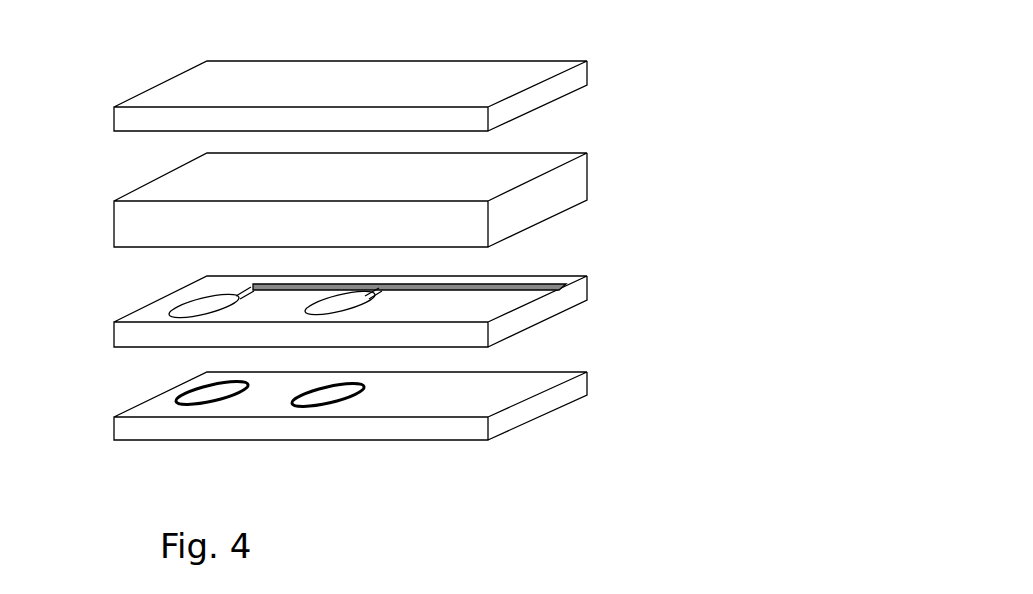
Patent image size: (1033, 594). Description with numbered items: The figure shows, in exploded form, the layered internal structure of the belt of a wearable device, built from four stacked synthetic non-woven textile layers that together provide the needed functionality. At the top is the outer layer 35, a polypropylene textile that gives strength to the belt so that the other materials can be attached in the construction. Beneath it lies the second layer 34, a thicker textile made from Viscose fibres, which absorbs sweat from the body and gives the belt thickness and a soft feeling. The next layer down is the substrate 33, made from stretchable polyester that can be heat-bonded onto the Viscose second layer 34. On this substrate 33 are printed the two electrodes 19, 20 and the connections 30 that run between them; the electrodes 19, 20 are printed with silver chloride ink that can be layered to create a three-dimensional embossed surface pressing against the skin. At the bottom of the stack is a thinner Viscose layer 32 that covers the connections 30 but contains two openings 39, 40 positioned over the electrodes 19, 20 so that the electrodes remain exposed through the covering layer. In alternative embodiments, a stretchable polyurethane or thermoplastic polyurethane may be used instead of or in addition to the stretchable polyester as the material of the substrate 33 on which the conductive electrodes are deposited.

The outer layer 35 is at (582, 76).
The second layer 34 is at (582, 186).
The substrate 33 is at (582, 292).
The thinner Viscose layer 32 is at (582, 385).
The connections 30 is at (525, 283).
The electrode 20 is at (319, 302).
The electrode 19 is at (196, 303).
The opening 40 is at (183, 406).
The opening 39 is at (340, 403).